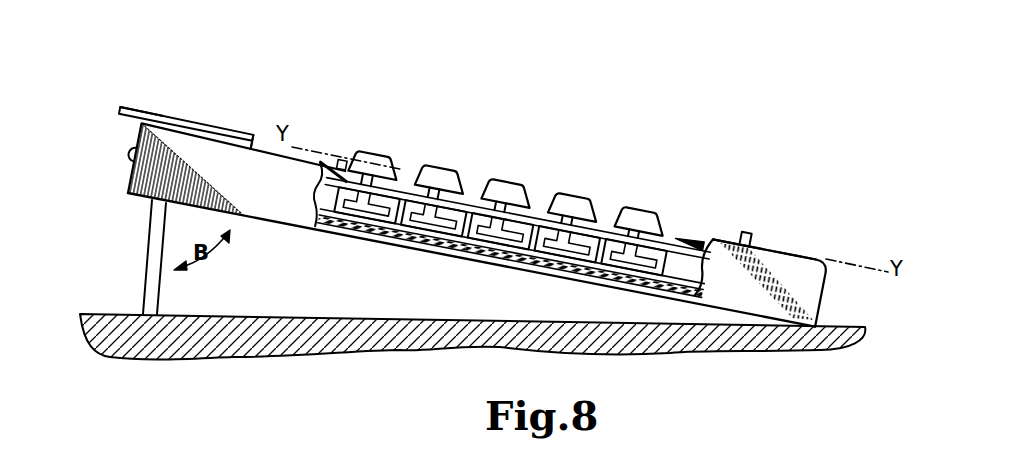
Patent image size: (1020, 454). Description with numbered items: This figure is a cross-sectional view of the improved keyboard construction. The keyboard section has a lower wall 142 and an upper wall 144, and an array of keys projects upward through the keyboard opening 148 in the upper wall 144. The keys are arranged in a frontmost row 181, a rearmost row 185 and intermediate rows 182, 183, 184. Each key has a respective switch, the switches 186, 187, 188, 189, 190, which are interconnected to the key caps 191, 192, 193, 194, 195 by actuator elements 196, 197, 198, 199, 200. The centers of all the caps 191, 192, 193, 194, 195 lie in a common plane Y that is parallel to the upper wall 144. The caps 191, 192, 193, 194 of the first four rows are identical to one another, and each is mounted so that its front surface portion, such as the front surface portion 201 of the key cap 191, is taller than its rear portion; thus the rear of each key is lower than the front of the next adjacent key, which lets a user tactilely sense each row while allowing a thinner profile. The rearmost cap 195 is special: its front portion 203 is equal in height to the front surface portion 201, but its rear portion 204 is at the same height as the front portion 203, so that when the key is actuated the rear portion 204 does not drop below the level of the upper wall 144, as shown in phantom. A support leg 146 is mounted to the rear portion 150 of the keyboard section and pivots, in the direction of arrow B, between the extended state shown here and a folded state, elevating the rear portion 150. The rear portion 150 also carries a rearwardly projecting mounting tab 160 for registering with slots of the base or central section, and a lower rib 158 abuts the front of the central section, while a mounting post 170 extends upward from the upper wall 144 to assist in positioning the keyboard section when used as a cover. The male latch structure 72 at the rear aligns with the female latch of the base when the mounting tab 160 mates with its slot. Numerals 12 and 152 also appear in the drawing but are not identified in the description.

The ground surface 12 is at (818, 324).
The male latch structure 72 is at (127, 166).
The lower wall 142 is at (243, 223).
The upper wall 144 is at (260, 140).
The support leg 146 is at (147, 268).
The keyboard opening 148 is at (348, 160).
The rear portion 150 is at (145, 199).
The end block 152 is at (797, 263).
The lower rib 158 is at (183, 122).
The mounting tab 160 is at (133, 107).
The mounting post 170 is at (762, 228).
The frontmost row 181 is at (662, 176).
The intermediate row 182 is at (592, 166).
The intermediate row 183 is at (532, 146).
The intermediate row 184 is at (452, 119).
The rearmost row 185 is at (370, 111).
The switch 186 is at (637, 286).
The switch 187 is at (558, 283).
The switch 188 is at (482, 262).
The switch 189 is at (395, 261).
The switch 190 is at (352, 245).
The key cap 191 is at (668, 208).
The key cap 192 is at (590, 200).
The key cap 193 is at (518, 184).
The key cap 194 is at (458, 175).
The key cap 195 is at (362, 157).
The actuator element 196 is at (617, 293).
The actuator element 197 is at (548, 272).
The actuator element 198 is at (468, 252).
The actuator element 199 is at (380, 253).
The actuator element 200 is at (345, 230).
The front surface portion 201 is at (676, 226).
The front portion 203 is at (402, 174).
The rear portion 204 is at (352, 150).